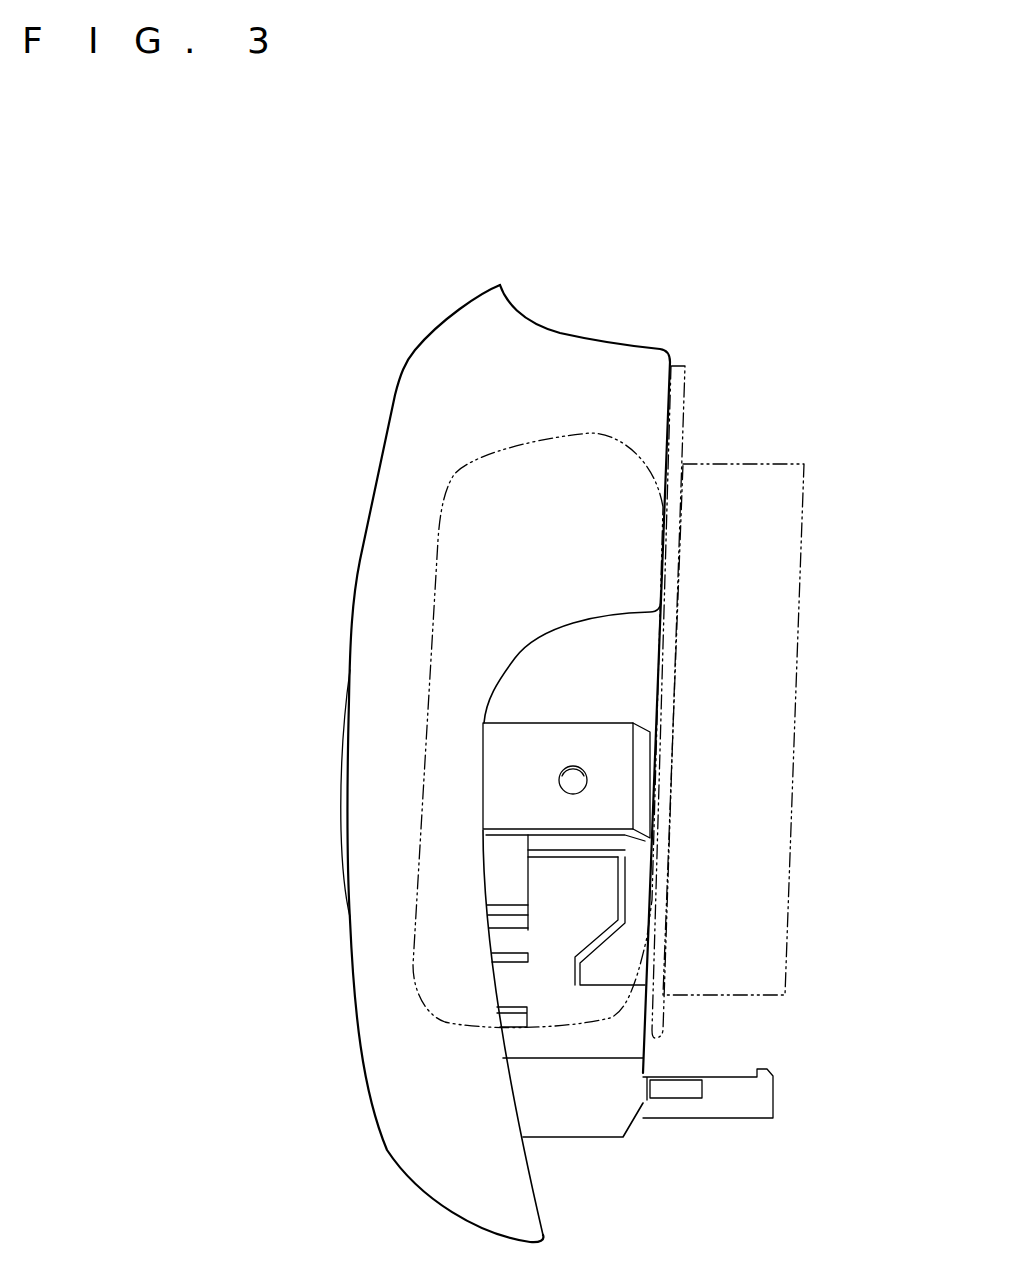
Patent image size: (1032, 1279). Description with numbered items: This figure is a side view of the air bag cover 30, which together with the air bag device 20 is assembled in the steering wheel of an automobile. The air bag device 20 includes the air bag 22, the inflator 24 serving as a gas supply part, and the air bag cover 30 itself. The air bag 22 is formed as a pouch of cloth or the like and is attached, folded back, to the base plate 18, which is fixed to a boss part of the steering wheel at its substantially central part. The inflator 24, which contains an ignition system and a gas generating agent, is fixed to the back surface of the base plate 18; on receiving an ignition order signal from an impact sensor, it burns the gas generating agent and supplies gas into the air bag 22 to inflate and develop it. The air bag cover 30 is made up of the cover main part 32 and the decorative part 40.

The base plate 18 is at (685, 378).
The air bag device 20 is at (707, 440).
The air bag 22 is at (590, 432).
The inflator 24 is at (805, 704).
The air bag cover 30 is at (457, 314).
The cover main part 32 is at (410, 410).
The decorative part 40 is at (340, 762).